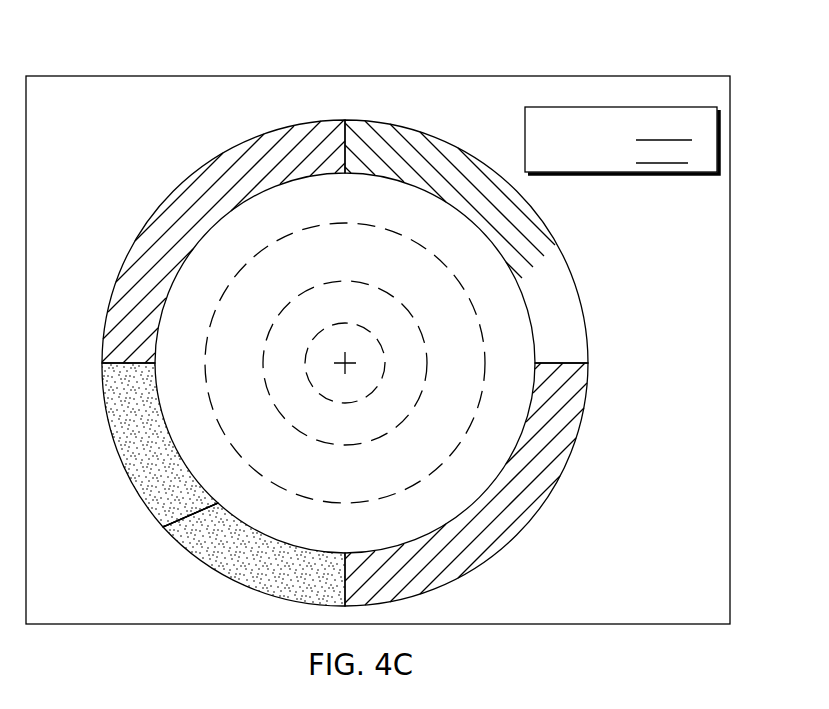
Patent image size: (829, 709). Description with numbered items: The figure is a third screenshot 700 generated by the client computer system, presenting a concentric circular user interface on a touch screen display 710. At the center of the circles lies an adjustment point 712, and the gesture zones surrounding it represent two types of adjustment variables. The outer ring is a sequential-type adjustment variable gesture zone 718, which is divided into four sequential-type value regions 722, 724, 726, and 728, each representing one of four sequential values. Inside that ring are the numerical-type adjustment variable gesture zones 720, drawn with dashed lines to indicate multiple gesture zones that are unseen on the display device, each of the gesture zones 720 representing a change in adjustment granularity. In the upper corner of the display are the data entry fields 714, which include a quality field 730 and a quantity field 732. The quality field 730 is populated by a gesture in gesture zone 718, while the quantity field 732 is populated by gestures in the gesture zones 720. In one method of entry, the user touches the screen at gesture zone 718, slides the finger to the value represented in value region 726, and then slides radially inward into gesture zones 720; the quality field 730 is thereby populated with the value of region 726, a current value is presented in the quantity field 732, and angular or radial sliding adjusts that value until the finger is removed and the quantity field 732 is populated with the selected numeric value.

The third screenshot 700 is at (640, 59).
The touch screen display 710 is at (731, 212).
The adjustment point 712 is at (348, 350).
The data entry fields 714 is at (616, 134).
The sequential-type adjustment variable gesture zone 718 is at (130, 475).
The numerical-type adjustment variable gesture zones 720 is at (164, 528).
The sequential-type value region 722 is at (160, 240).
The sequential-type value region 724 is at (535, 246).
The sequential-type value region 726 is at (535, 487).
The sequential-type value region 728 is at (265, 575).
The quality field 730 is at (698, 129).
The quantity field 732 is at (692, 151).